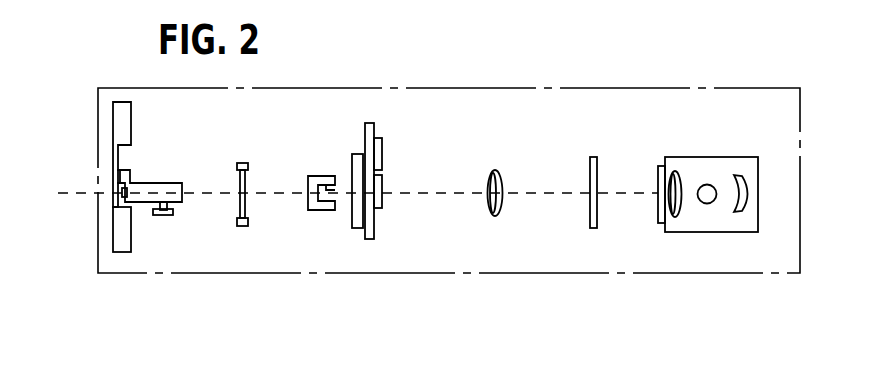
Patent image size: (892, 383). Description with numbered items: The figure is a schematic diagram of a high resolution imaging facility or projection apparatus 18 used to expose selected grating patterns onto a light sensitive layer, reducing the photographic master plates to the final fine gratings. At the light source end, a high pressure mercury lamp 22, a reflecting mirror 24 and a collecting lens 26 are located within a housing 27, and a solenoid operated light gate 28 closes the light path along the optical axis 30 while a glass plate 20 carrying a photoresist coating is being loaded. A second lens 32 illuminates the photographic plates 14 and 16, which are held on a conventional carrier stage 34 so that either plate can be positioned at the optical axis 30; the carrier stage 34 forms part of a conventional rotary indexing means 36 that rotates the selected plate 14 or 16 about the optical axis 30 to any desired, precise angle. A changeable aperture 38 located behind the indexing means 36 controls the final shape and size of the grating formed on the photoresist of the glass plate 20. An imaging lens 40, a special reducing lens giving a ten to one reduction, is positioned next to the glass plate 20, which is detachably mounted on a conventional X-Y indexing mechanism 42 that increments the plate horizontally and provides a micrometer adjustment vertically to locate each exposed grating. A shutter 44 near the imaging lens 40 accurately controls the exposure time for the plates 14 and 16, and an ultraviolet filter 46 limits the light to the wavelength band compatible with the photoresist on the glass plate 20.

The projection apparatus 18 is at (412, 80).
The glass plate 20 is at (113, 160).
The imaging lens 40 is at (157, 183).
The X-Y indexing mechanism 42 is at (127, 232).
The shutter 44 is at (245, 207).
The changeable aperture 38 is at (320, 178).
The rotary indexing means 36 is at (362, 222).
The carrier stage 34 is at (372, 221).
The photographic plate 16 is at (382, 153).
The photographic plate 14 is at (382, 192).
The second lens 32 is at (498, 172).
The optical axis 30 is at (527, 195).
The ultraviolet filter 46 is at (597, 220).
The solenoid operated light gate 28 is at (657, 178).
The collecting lens 26 is at (678, 182).
The high pressure mercury lamp 22 is at (708, 184).
The reflecting mirror 24 is at (745, 182).
The housing 27 is at (738, 232).